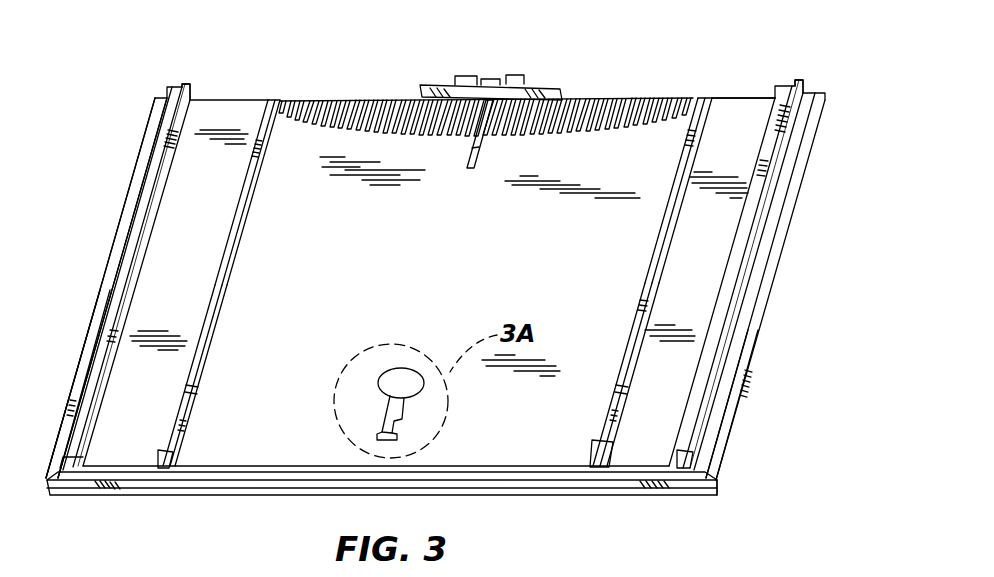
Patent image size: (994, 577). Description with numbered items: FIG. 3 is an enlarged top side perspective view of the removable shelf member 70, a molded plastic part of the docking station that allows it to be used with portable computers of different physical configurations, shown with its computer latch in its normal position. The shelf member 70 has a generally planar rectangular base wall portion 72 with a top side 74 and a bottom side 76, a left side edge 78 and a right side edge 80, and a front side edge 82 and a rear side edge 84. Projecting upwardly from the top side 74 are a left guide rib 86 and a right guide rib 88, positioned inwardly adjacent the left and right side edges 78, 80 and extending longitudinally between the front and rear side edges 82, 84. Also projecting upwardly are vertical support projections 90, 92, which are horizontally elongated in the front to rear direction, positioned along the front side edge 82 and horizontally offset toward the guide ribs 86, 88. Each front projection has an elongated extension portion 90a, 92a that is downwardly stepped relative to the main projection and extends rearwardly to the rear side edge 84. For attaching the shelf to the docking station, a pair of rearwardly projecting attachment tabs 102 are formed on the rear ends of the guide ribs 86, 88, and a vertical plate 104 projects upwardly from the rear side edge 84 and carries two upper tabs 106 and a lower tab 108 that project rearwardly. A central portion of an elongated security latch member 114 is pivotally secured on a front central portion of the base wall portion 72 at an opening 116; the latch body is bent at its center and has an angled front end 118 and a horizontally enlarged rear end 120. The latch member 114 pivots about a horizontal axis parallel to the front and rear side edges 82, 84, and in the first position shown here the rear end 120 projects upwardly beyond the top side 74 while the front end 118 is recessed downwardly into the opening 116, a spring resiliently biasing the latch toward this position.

The shelf member 70 is at (757, 367).
The base wall portion 72 is at (130, 190).
The top side 74 is at (504, 253).
The bottom side 76 is at (735, 400).
The left side edge 78 is at (60, 445).
The right side edge 80 is at (797, 185).
The front side edge 82 is at (205, 496).
The rear side edge 84 is at (737, 97).
The left guide rib 86 is at (108, 292).
The right guide rib 88 is at (735, 275).
The vertical support projection 90 is at (177, 427).
The elongated extension portion 90a is at (222, 268).
The vertical support projection 92 is at (605, 415).
The elongated extension portion 92a is at (652, 270).
The attachment tabs 102 is at (187, 82).
The vertical plate 104 is at (545, 86).
The upper tabs 106 is at (463, 80).
The lower tab 108 is at (493, 80).
The security latch member 114 is at (350, 378).
The opening 116 is at (385, 417).
The angled front end 118 is at (385, 438).
The horizontally enlarged rear end 120 is at (395, 380).